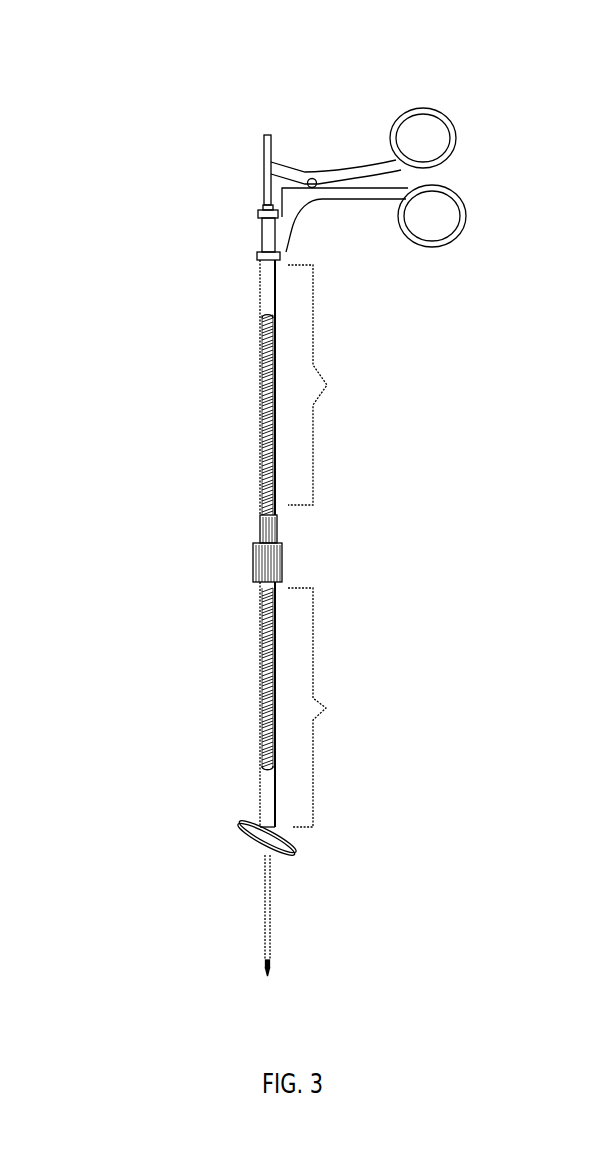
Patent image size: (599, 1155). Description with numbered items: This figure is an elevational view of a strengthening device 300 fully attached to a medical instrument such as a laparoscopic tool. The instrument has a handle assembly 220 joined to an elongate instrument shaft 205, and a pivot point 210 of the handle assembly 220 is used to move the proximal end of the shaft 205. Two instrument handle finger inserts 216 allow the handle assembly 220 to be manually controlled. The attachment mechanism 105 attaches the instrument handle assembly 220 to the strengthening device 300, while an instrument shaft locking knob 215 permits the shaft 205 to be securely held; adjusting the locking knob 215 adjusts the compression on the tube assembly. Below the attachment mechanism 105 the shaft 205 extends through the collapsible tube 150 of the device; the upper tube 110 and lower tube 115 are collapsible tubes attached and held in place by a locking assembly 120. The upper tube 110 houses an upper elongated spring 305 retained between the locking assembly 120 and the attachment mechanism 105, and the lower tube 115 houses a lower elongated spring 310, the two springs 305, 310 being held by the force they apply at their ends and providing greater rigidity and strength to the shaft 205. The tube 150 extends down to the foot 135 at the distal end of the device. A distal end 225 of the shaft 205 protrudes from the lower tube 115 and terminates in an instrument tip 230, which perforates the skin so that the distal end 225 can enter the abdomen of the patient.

The strengthening device 300 is at (142, 58).
The instrument shaft 205 is at (263, 150).
The instrument shaft locking knob 215 is at (256, 209).
The attachment mechanism 105 is at (257, 253).
The pivot point 210 is at (313, 178).
The instrument handle finger inserts 216 is at (428, 217).
The handle assembly 220 is at (353, 200).
The collapsible tube 150 is at (259, 310).
The upper elongated spring 305 is at (258, 399).
The upper tube 110 is at (328, 385).
The locking assembly 120 is at (251, 557).
The lower elongated spring 310 is at (260, 685).
The lower tube 115 is at (330, 707).
The foot 135 is at (240, 823).
The distal end of the shaft 225 is at (260, 890).
The instrument tip 230 is at (260, 947).